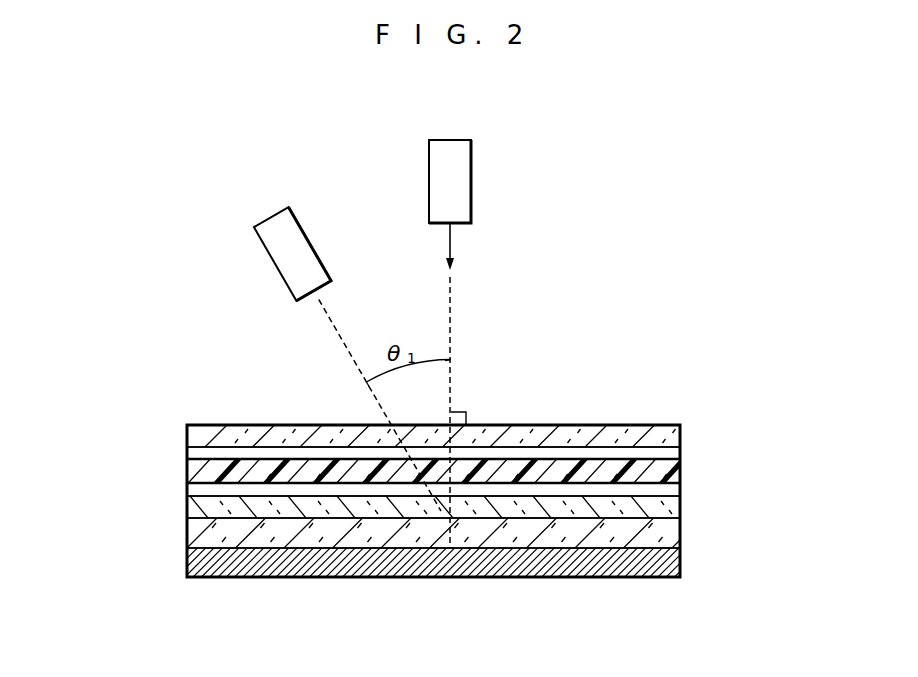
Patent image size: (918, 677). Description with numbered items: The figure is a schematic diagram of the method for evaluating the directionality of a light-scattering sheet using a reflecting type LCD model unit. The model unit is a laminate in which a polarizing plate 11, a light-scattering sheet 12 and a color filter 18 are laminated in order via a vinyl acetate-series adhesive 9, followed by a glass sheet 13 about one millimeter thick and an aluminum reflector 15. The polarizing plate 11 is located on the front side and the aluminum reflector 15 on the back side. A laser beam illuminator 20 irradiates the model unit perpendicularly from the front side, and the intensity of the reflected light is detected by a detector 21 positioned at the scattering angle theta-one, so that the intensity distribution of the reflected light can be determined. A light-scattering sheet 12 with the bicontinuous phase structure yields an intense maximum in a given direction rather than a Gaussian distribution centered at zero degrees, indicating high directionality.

The vinyl acetate-series adhesive 9 is at (665, 488).
The polarizing plate 11 is at (647, 396).
The light-scattering sheet 12 is at (207, 475).
The glass sheet 13 is at (665, 532).
The aluminum reflector 15 is at (532, 568).
The color filter 18 is at (665, 505).
The laser beam illuminator 20 is at (457, 176).
The light receiving element 21 is at (300, 254).